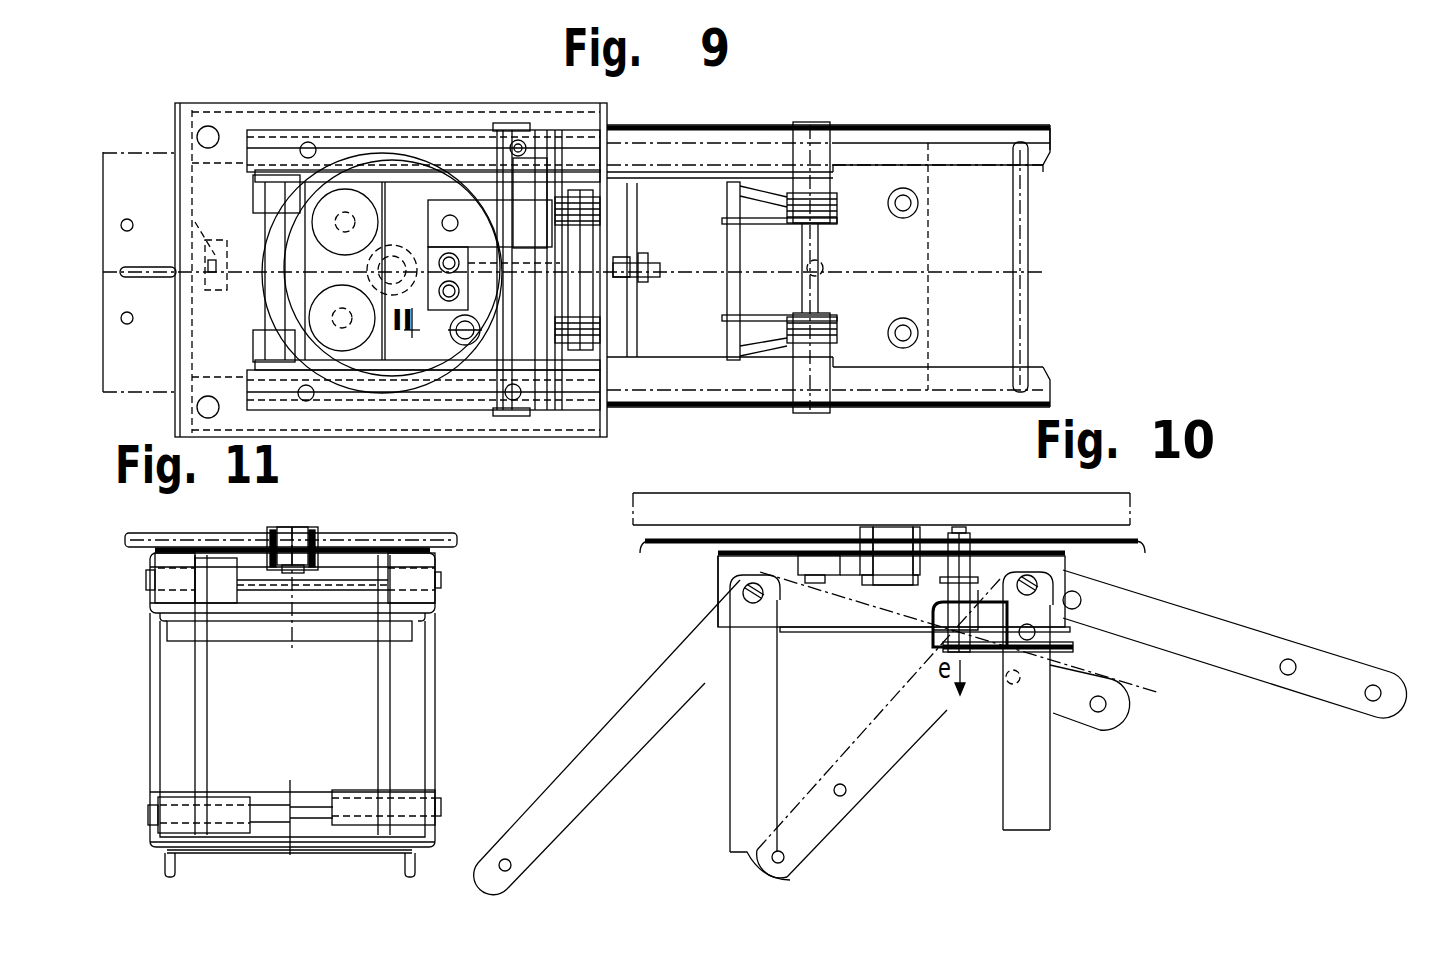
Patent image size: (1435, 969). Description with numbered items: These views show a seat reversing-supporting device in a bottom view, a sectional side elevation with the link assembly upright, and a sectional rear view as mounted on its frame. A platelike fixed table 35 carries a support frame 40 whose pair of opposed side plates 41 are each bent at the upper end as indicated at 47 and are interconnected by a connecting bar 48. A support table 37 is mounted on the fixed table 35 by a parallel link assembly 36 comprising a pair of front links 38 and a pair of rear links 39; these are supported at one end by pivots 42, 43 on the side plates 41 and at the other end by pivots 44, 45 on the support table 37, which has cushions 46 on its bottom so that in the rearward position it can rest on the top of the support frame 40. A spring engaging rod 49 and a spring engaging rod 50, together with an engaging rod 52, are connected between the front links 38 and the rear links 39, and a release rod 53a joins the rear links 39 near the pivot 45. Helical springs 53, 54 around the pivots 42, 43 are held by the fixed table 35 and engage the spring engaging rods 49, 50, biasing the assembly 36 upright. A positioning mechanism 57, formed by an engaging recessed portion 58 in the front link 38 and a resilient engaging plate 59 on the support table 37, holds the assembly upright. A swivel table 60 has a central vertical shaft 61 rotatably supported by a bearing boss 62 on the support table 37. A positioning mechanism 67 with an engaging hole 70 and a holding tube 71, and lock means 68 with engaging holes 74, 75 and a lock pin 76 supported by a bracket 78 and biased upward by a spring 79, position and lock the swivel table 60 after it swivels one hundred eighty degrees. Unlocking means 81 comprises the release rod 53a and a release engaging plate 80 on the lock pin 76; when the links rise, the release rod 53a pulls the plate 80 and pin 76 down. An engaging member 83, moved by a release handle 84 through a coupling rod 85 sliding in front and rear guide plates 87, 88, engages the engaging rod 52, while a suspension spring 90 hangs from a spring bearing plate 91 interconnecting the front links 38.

In FIG. 11, the fixed table 35 is at (359, 852).
In FIG. 10, the parallel link assembly 36 is at (718, 766).
In FIG. 9, the support table 37 is at (458, 395).
In FIG. 11, the support table 37 is at (245, 548).
In FIG. 10, the support table 37 is at (843, 550).
In FIG. 9, the front links 38 is at (420, 300).
In FIG. 11, the front links 38 is at (193, 760).
In FIG. 10, the front links 38 is at (652, 675).
In FIG. 9, the rear links 39 is at (712, 170).
In FIG. 11, the rear links 39 is at (392, 758).
In FIG. 10, the rear links 39 is at (1218, 620).
In FIG. 9, the support frame 40 is at (888, 124).
In FIG. 11, the support frame 40 is at (442, 686).
In FIG. 9, the side plates 41 is at (956, 124).
In FIG. 11, the side plates 41 is at (151, 684).
In FIG. 9, the pivot 42 is at (596, 256).
In FIG. 11, the pivot 42 is at (258, 803).
In FIG. 9, the pivot 43 is at (820, 265).
In FIG. 11, the pivot 43 is at (312, 806).
In FIG. 9, the pivot 44 is at (260, 324).
In FIG. 11, the pivot 44 is at (258, 610).
In FIG. 9, the pivot 45 is at (530, 350).
In FIG. 11, the pivot 45 is at (356, 583).
In FIG. 11, the cushions 46 is at (156, 615).
In FIG. 11, the bent upper end 47 is at (183, 610).
In FIG. 9, the connecting bar 48 is at (1030, 345).
In FIG. 11, the connecting bar 48 is at (280, 640).
In FIG. 9, the spring engaging rod 49 is at (500, 350).
In FIG. 9, the spring engaging rod 50 is at (662, 268).
In FIG. 9, the engaging rod 52 is at (650, 262).
In FIG. 9, the helical spring 53 is at (602, 212).
In FIG. 10, the helical spring 53 is at (1070, 632).
In FIG. 9, the release rod 53a is at (578, 190).
In FIG. 9, the helical spring 54 is at (841, 211).
In FIG. 10, the positioning mechanism 57 is at (775, 547).
In FIG. 10, the engaging recessed portion 58 is at (718, 558).
In FIG. 10, the resilient engaging plate 59 is at (810, 580).
In FIG. 9, the swivel table 60 is at (488, 128).
In FIG. 11, the swivel table 60 is at (222, 533).
In FIG. 10, the swivel table 60 is at (1068, 540).
In FIG. 9, the vertical shaft 61 is at (395, 248).
In FIG. 11, the vertical shaft 61 is at (300, 545).
In FIG. 10, the vertical shaft 61 is at (890, 550).
In FIG. 9, the bearing boss 62 is at (358, 180).
In FIG. 11, the bearing boss 62 is at (275, 531).
In FIG. 10, the bearing boss 62 is at (855, 587).
In FIG. 9, the positioning mechanism 67 is at (467, 350).
In FIG. 9, the lock means 68 is at (422, 200).
In FIG. 10, the lock means 68 is at (985, 540).
In FIG. 9, the engaging hole 70 is at (334, 180).
In FIG. 9, the holding tube 71 is at (450, 350).
In FIG. 10, the engaging hole 74 is at (950, 546).
In FIG. 9, the engaging hole 75 is at (353, 350).
In FIG. 9, the lock pin 76 is at (455, 200).
In FIG. 10, the lock pin 76 is at (955, 660).
In FIG. 9, the bracket 78 is at (400, 185).
In FIG. 10, the bracket 78 is at (932, 615).
In FIG. 10, the spring 79 is at (985, 660).
In FIG. 9, the release engaging plate 80 is at (507, 160).
In FIG. 10, the release engaging plate 80 is at (1075, 648).
In FIG. 9, the unlocking means 81 is at (521, 170).
In FIG. 10, the unlocking means 81 is at (1068, 697).
In FIG. 9, the engaging member 83 is at (304, 175).
In FIG. 9, the release handle 84 is at (162, 270).
In FIG. 9, the coupling rod 85 is at (225, 258).
In FIG. 9, the front guide plate 87 is at (199, 220).
In FIG. 9, the rear guide plate 88 is at (640, 295).
In FIG. 9, the suspension spring 90 is at (275, 280).
In FIG. 9, the spring bearing plate 91 is at (393, 355).